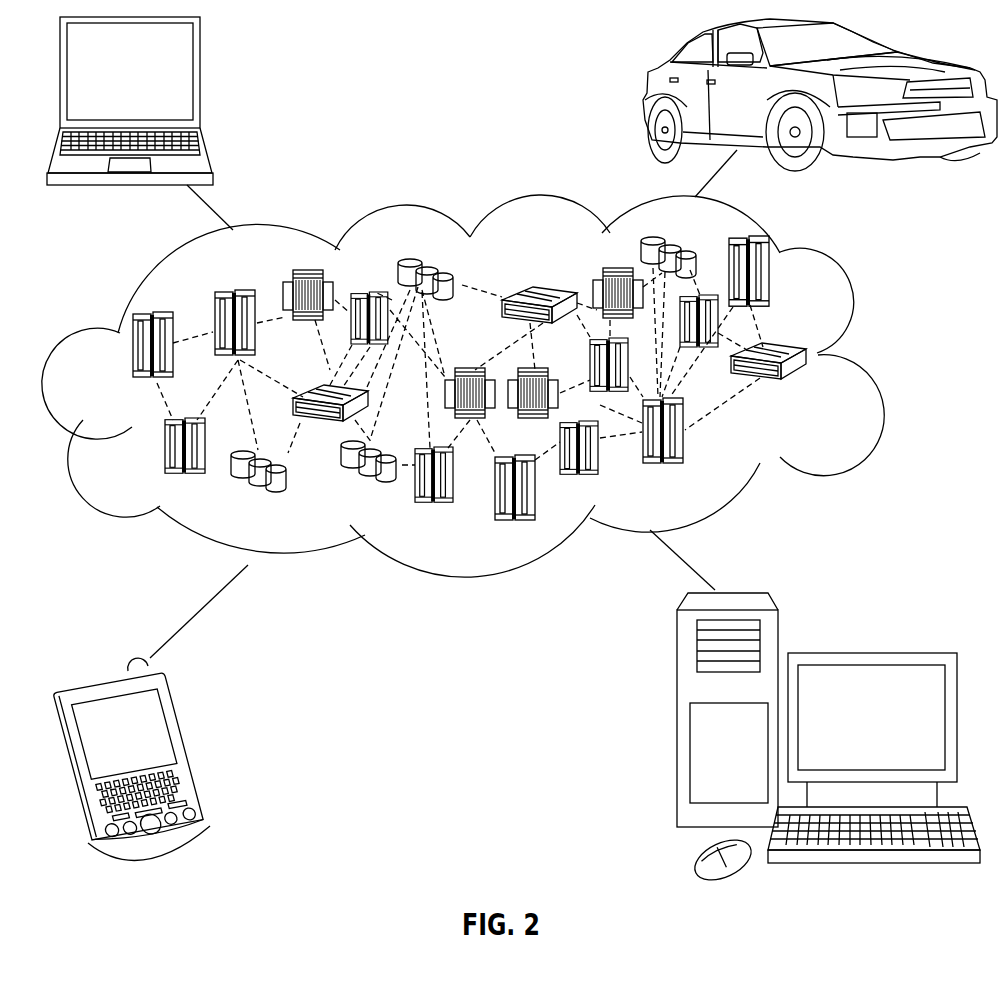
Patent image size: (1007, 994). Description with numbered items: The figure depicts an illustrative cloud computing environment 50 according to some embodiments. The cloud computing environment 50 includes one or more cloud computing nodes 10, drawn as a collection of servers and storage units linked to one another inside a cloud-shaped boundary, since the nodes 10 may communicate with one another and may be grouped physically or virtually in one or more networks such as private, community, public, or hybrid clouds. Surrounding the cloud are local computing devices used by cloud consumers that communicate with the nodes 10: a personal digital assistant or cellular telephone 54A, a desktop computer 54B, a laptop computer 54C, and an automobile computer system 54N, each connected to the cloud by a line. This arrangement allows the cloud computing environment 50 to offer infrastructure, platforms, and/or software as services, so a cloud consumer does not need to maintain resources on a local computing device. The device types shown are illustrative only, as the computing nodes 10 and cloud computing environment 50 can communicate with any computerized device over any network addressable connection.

The cloud computing node 10 is at (810, 389).
The cloud computing environment 50 is at (870, 357).
The personal digital assistant or cellular telephone 54A is at (192, 748).
The desktop computer 54B is at (868, 652).
The laptop computer 54C is at (202, 80).
The automobile computer system 54N is at (643, 97).